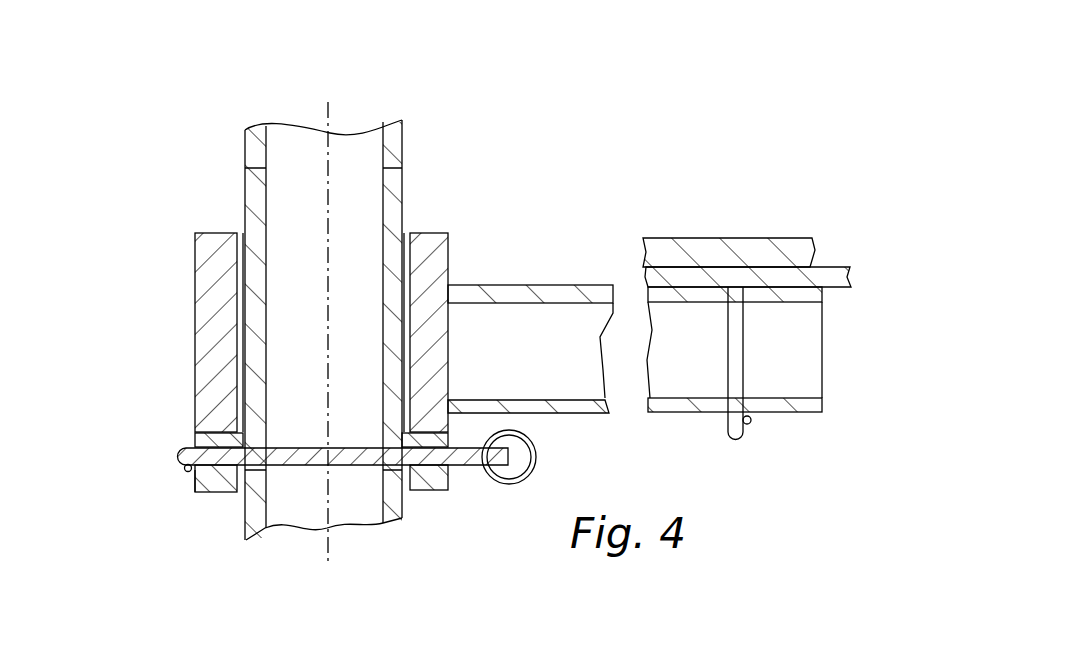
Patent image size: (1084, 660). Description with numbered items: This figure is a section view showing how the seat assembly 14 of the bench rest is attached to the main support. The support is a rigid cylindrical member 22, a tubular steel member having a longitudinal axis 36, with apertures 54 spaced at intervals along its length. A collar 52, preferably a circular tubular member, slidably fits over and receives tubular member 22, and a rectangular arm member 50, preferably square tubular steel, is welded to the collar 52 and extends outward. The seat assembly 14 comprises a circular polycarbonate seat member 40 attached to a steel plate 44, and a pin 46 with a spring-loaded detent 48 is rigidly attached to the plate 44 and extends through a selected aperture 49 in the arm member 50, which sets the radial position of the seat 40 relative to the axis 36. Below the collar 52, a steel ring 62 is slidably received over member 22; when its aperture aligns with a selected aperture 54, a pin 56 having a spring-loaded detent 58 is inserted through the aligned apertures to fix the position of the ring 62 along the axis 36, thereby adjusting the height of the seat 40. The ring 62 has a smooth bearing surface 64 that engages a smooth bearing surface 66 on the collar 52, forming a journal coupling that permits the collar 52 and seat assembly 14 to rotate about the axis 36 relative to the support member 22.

The seat assembly 14 is at (834, 437).
The rigid cylindrical member 22 is at (245, 208).
The axis 36 is at (332, 110).
The seat member 40 is at (714, 238).
The steel plate 44 is at (787, 300).
The pin 46 is at (728, 430).
The spring-loaded detent 48 is at (752, 422).
The aperture 49 is at (785, 402).
The rectangular arm member 50 is at (541, 285).
The collar 52 is at (448, 262).
The apertures 54 is at (252, 155).
The pin 56 is at (463, 467).
The spring-loaded detent 58 is at (186, 470).
The steel ring 62 is at (192, 492).
The smooth bearing surface 64 is at (210, 430).
The smooth bearing surface 66 is at (195, 441).